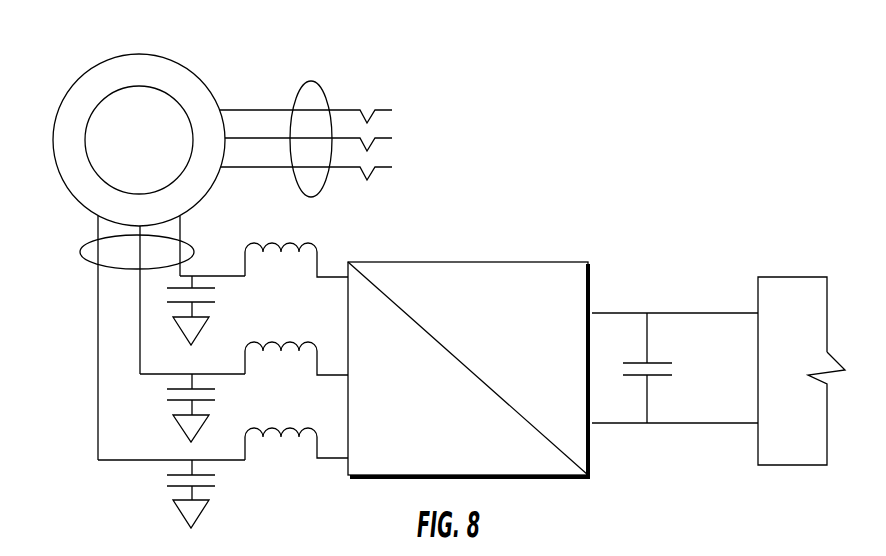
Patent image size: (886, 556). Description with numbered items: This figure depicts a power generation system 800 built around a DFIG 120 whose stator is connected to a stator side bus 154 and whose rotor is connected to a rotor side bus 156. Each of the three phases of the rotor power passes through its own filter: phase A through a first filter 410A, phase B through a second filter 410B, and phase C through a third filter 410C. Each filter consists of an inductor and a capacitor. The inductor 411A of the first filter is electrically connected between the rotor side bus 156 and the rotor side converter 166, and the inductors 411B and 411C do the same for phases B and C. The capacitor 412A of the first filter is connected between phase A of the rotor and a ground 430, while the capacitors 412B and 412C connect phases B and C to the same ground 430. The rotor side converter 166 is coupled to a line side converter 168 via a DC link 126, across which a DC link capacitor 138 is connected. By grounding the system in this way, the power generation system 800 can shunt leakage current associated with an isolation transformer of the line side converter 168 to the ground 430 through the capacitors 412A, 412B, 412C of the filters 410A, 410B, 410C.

The power generation system 800 is at (562, 69).
The DFIG 120 is at (152, 54).
The stator side bus 154 is at (311, 82).
The rotor side bus 156 is at (80, 252).
The first filter 410A is at (230, 244).
The second filter 410B is at (168, 354).
The third filter 410C is at (162, 442).
The inductor 411A is at (311, 244).
The inductor 411B is at (288, 342).
The inductor 411C is at (288, 428).
The capacitor 412A is at (212, 287).
The capacitor 412B is at (172, 388).
The capacitor 412C is at (172, 474).
The ground 430 is at (203, 330).
The rotor side converter 166 is at (500, 262).
The DC link 126 is at (688, 425).
The DC link capacitor 138 is at (660, 363).
The line side converter 168 is at (790, 277).